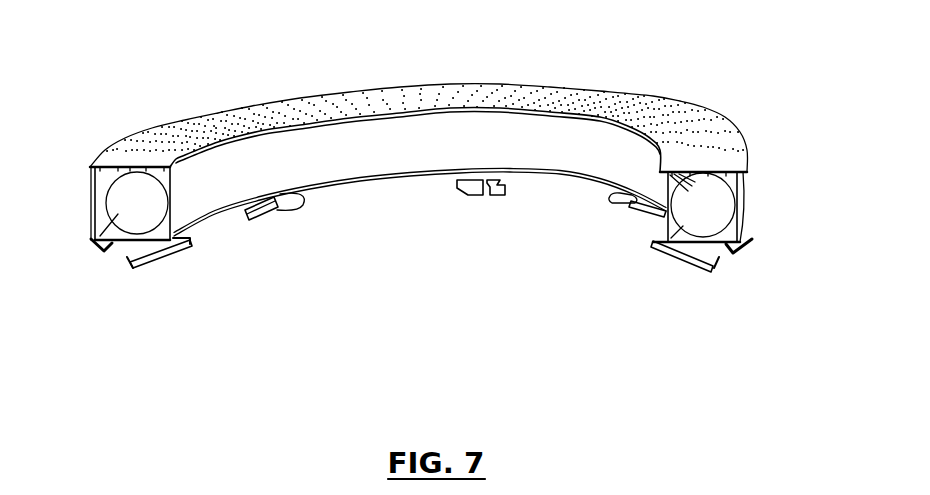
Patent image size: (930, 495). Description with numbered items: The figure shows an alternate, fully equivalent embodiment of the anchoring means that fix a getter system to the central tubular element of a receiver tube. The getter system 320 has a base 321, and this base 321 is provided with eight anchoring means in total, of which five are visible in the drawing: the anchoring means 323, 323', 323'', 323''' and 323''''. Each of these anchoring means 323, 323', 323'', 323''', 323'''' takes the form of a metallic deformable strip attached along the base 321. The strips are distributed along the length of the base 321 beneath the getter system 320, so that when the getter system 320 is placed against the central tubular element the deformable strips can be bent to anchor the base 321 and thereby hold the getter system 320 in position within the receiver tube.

The getter system 320 is at (456, 201).
The base 321 is at (383, 178).
The anchoring means 323 is at (164, 292).
The anchoring means 323' is at (297, 249).
The anchoring means 323'' is at (496, 246).
The anchoring means 323''' is at (622, 269).
The anchoring means 323'''' is at (705, 286).